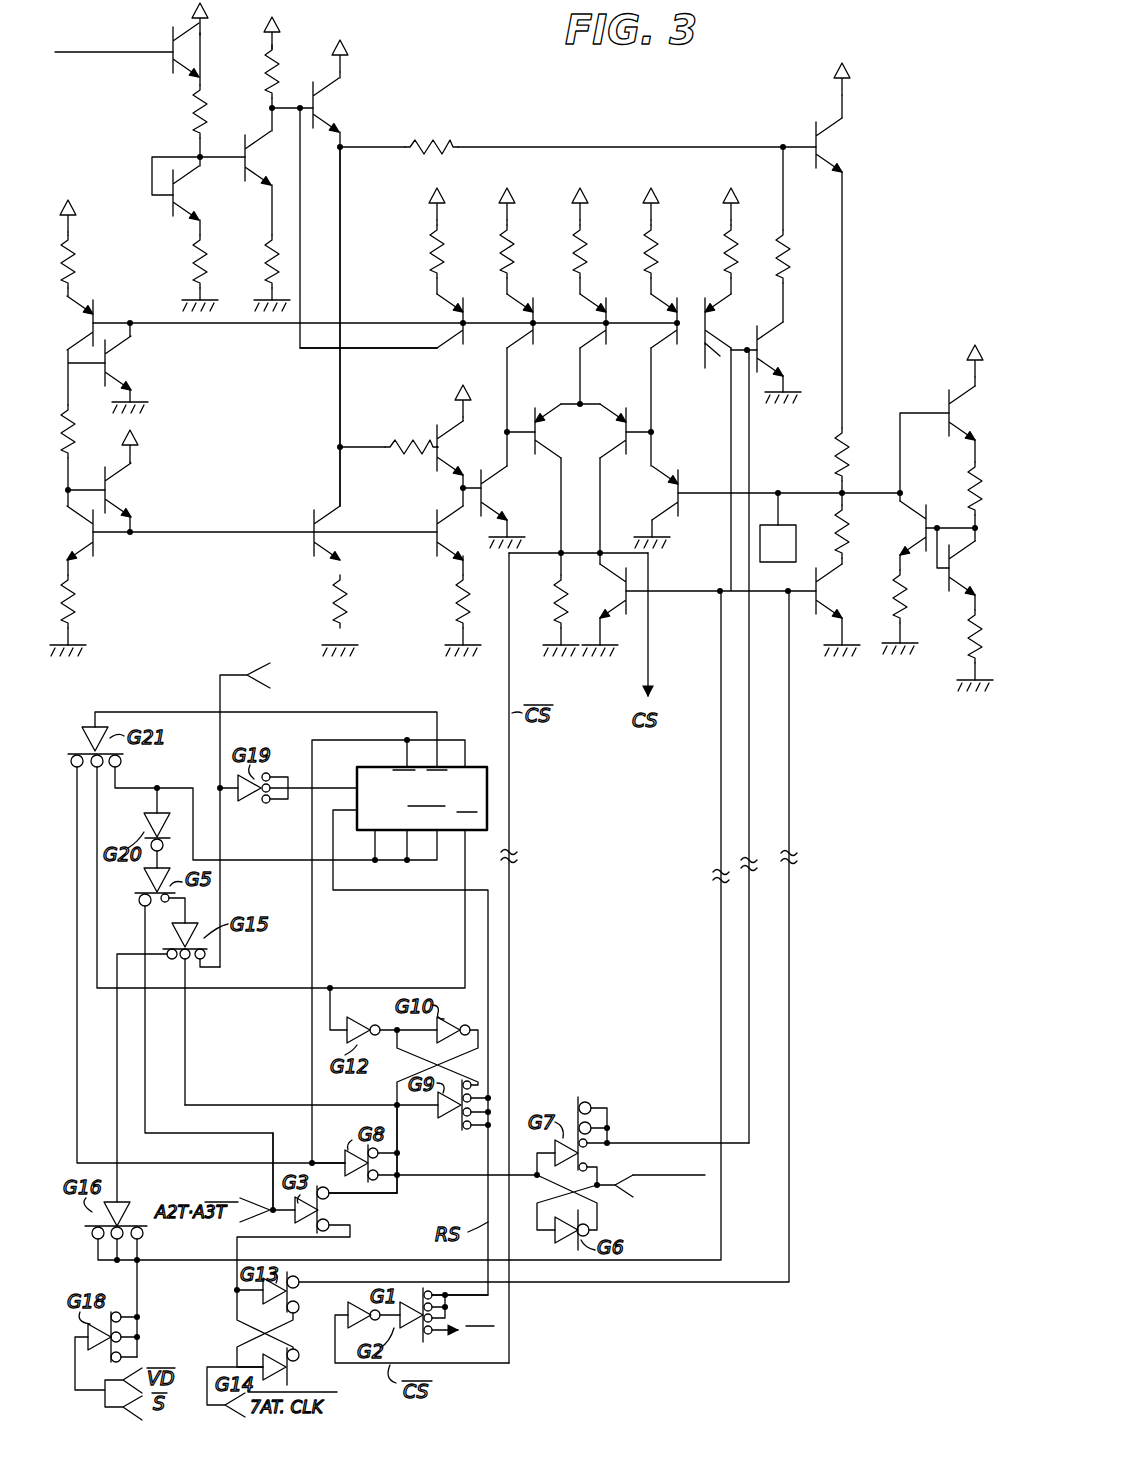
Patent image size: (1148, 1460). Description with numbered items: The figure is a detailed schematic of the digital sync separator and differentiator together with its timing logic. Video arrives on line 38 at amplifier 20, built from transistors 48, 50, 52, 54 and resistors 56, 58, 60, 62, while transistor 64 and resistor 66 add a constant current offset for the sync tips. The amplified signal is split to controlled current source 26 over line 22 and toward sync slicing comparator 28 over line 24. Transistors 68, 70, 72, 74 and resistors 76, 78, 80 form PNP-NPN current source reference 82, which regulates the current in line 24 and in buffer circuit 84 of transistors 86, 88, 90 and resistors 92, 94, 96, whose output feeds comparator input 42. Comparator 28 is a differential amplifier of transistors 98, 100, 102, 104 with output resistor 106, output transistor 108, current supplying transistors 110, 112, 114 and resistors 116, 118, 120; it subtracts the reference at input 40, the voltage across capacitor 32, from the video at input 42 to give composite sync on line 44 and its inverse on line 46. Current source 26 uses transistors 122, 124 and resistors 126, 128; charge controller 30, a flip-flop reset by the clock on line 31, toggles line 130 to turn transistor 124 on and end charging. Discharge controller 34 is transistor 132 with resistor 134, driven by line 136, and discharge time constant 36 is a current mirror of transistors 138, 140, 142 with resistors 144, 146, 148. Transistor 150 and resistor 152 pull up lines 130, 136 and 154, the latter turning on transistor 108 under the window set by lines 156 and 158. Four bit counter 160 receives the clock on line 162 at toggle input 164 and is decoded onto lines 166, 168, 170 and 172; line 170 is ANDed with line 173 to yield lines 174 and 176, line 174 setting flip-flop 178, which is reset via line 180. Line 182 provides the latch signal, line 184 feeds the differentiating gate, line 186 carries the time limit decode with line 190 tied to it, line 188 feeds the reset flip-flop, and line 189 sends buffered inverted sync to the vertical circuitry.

The amplifier 20 is at (308, 40).
The line 22 is at (591, 147).
The line 24 is at (340, 385).
The controlled current source 26 is at (864, 128).
The sync slicing comparator 28 is at (575, 413).
The charge controller 30 is at (608, 1159).
The line 31 is at (618, 1194).
The capacitor 32 is at (772, 528).
The discharge controller 34 is at (848, 631).
The discharge time constant 36 is at (922, 423).
The line 38 is at (98, 70).
The input 40 is at (708, 489).
The input 42 is at (464, 480).
The line 44 is at (648, 658).
The line 46 is at (512, 792).
The transistor 48 is at (187, 48).
The transistor 50 is at (170, 208).
The transistor 52 is at (262, 150).
The transistor 54 is at (347, 90).
The resistor 56 is at (194, 120).
The resistor 58 is at (204, 250).
The resistor 60 is at (269, 272).
The resistor 62 is at (265, 86).
The transistor 64 is at (458, 314).
The resistor 66 is at (430, 252).
The transistor 68 is at (100, 314).
The transistor 70 is at (122, 354).
The transistor 72 is at (124, 494).
The transistor 74 is at (86, 536).
The resistor 76 is at (74, 266).
The resistor 78 is at (72, 422).
The resistor 80 is at (77, 602).
The PNP-NPN current source reference 82 is at (141, 426).
The buffer circuit 84 is at (297, 522).
The transistor 86 is at (302, 548).
The transistor 88 is at (438, 466).
The transistor 90 is at (429, 538).
The resistor 92 is at (338, 598).
The resistor 94 is at (405, 442).
The resistor 96 is at (452, 596).
The transistor 98 is at (494, 496).
The transistor 100 is at (547, 432).
The transistor 102 is at (623, 434).
The transistor 104 is at (662, 498).
The output resistor 106 is at (554, 592).
The output transistor 108 is at (613, 598).
The current supplying transistor 110 is at (536, 314).
The current supplying transistor 112 is at (608, 314).
The current supplying transistor 114 is at (680, 314).
The resistor 116 is at (500, 244).
The resistor 118 is at (573, 244).
The resistor 120 is at (643, 244).
The transistor 122 is at (851, 142).
The transistor 124 is at (779, 350).
The resistor 126 is at (788, 256).
The resistor 128 is at (838, 456).
The line 130 is at (740, 433).
The transistor 132 is at (842, 596).
The resistor 134 is at (840, 520).
The line 136 is at (789, 1270).
The transistor 138 is at (917, 528).
The transistor 140 is at (962, 392).
The transistor 142 is at (948, 588).
The resistor 144 is at (897, 604).
The resistor 146 is at (972, 474).
The resistor 148 is at (974, 660).
The transistor 150 is at (704, 354).
The resistor 152 is at (722, 244).
The line 154 is at (720, 1242).
The line 156 is at (107, 1342).
The line 158 is at (103, 1399).
The four bit counter 160 is at (422, 799).
The line 162 is at (212, 694).
The toggle input 164 is at (327, 788).
The line 166 is at (280, 988).
The line 168 is at (323, 1163).
The line 170 is at (168, 960).
The line 172 is at (150, 816).
The line 173 is at (269, 1206).
The line 174 is at (354, 1236).
The line 176 is at (358, 1204).
The flip-flop 178 is at (233, 1330).
The line 180 is at (204, 1394).
The line 182 is at (187, 920).
The line 184 is at (115, 1049).
The line 186 is at (425, 1178).
The line 188 is at (404, 1128).
The line 189 is at (440, 1340).
The line 190 is at (268, 1104).